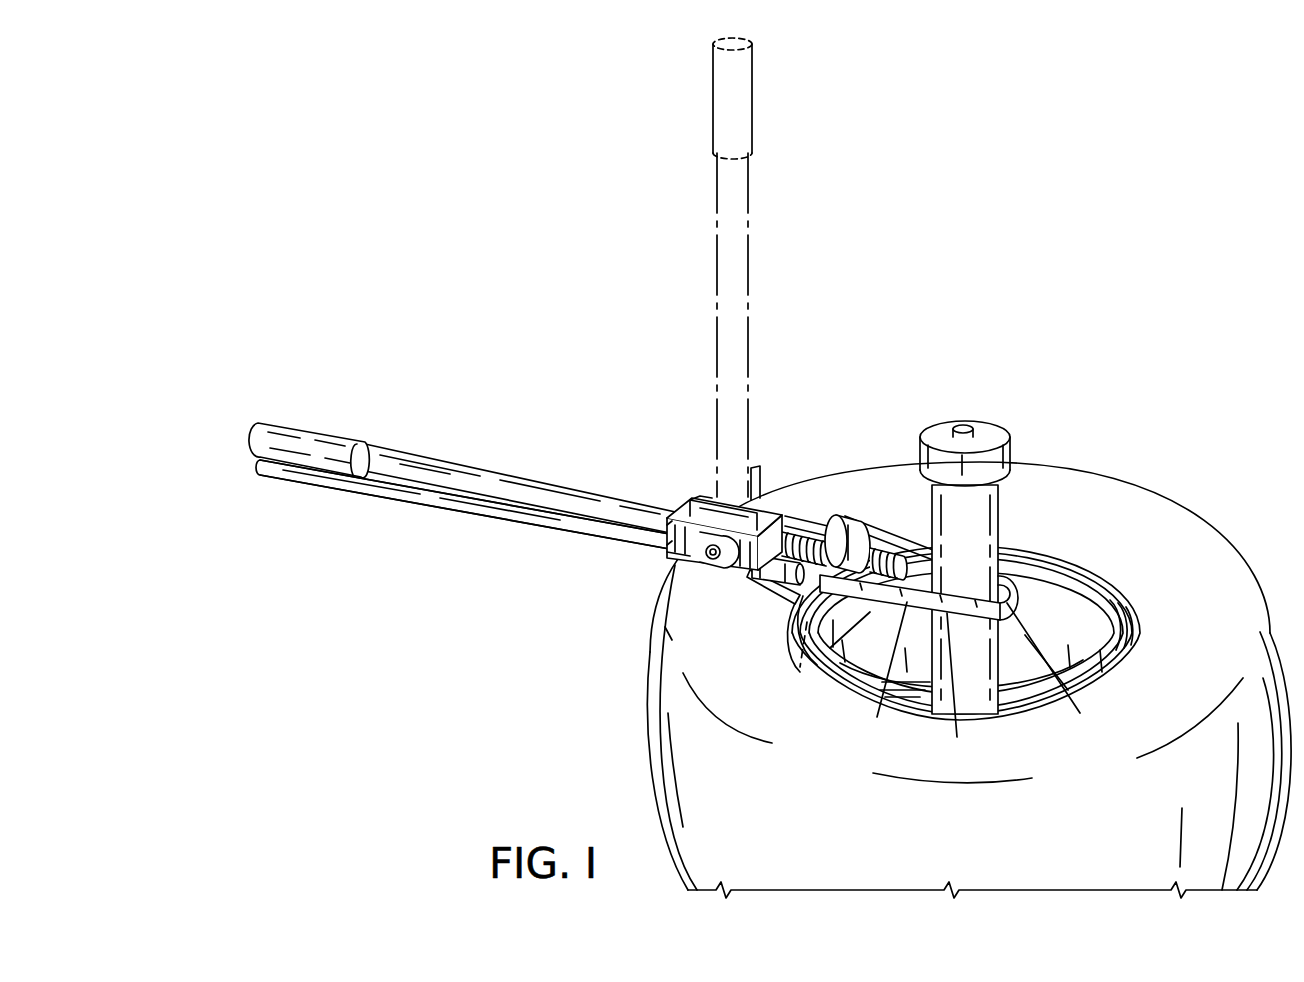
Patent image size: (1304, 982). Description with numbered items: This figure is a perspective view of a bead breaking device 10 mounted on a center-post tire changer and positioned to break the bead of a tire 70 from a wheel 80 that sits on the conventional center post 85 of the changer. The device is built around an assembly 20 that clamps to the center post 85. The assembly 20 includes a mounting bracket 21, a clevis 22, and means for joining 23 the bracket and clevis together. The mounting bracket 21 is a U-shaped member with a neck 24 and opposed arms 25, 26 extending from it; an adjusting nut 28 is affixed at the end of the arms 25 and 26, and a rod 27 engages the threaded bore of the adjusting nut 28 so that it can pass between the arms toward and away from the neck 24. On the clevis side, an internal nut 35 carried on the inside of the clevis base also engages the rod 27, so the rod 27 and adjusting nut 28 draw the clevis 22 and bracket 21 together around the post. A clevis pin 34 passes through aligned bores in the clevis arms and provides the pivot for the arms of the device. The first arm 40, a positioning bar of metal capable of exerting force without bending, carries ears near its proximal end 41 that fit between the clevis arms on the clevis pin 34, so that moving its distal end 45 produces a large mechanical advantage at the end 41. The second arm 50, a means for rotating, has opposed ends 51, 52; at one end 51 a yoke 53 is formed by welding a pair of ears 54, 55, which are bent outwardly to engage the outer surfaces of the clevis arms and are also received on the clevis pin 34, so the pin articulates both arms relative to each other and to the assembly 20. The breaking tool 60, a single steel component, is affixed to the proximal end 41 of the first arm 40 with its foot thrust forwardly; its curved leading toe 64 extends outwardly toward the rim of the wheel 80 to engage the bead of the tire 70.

The bead breaking device 10 is at (490, 198).
The assembly 20 is at (817, 500).
The mounting bracket 21 is at (947, 615).
The clevis 22 is at (775, 510).
The means for joining 23 is at (822, 528).
The neck 24 is at (1055, 670).
The arm 25 is at (882, 672).
The arm 26 is at (893, 540).
The rod 27 is at (892, 558).
The adjusting nut 28 is at (847, 527).
The clevis pin 34 is at (709, 568).
The internal nut 35 is at (740, 570).
The first arm 40 is at (443, 508).
The end 41 is at (785, 572).
The distal end 45 is at (288, 475).
The second arm 50 is at (405, 478).
The end 51 is at (695, 500).
The end 52 is at (290, 433).
The yoke 53 is at (677, 553).
The ear 54 is at (675, 538).
The ear 55 is at (755, 470).
The breaking tool 60 is at (778, 615).
The curved leading toe 64 is at (803, 650).
The tire 70 is at (1210, 518).
The wheel 80 is at (1082, 570).
The center post 85 is at (993, 505).